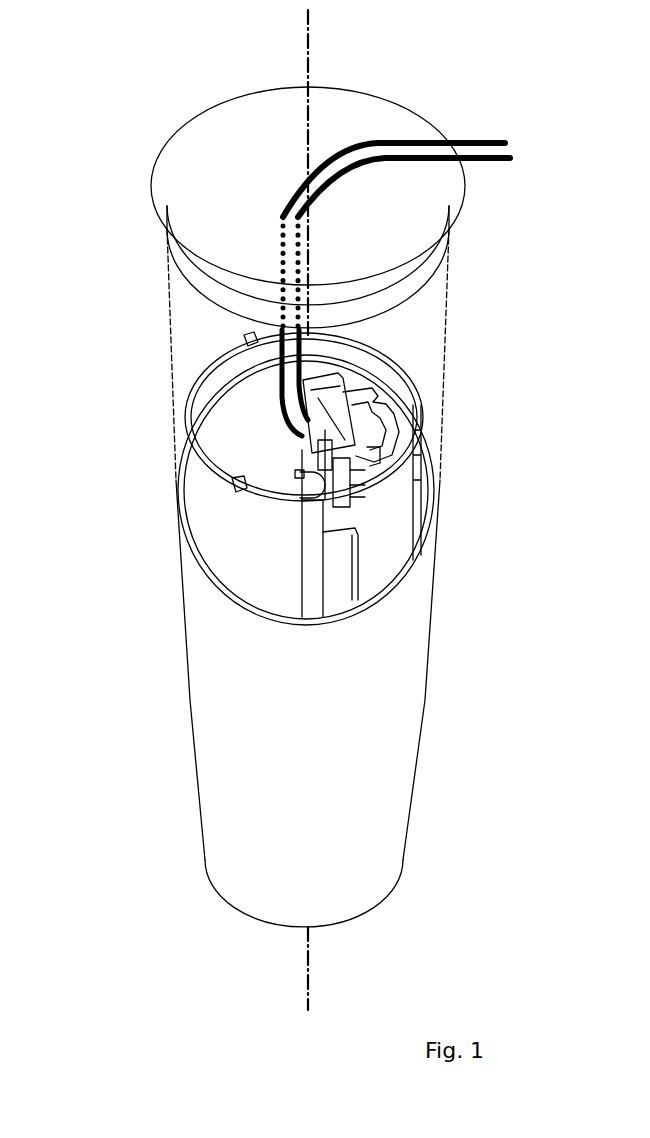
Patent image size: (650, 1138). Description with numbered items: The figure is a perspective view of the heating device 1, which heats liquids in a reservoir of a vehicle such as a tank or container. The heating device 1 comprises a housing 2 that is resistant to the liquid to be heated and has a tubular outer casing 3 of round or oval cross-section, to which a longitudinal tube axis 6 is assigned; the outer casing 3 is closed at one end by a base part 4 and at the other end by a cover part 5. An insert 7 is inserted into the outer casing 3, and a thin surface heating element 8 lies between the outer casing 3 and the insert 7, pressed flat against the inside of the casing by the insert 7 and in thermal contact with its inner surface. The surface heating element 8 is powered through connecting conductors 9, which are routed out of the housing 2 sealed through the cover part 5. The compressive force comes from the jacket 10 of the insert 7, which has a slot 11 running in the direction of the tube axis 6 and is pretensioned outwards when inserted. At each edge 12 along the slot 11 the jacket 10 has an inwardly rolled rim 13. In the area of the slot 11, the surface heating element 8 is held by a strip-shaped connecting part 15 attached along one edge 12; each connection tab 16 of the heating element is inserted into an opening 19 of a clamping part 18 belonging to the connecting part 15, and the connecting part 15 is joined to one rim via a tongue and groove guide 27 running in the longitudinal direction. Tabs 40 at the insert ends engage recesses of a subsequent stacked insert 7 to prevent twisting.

The heating device 1 is at (128, 300).
The housing 2 is at (190, 690).
The outer casing 3 is at (395, 725).
The base part 4 is at (377, 902).
The cover part 5 is at (433, 232).
The tube axis 6 is at (305, 62).
The insert 7 is at (390, 362).
The surface heating element 8 is at (240, 573).
The connecting conductors 9 is at (505, 143).
The jacket 10 is at (193, 398).
The slot 11 is at (340, 567).
The edge 12 is at (345, 475).
The rolled rim 13 is at (307, 487).
The strip-shaped connecting part 15 is at (313, 457).
The connection tab 16 is at (340, 473).
The clamping part 18 is at (337, 447).
The opening 19 is at (340, 487).
The tongue and groove guide 27 is at (367, 402).
The tab 40 is at (247, 342).